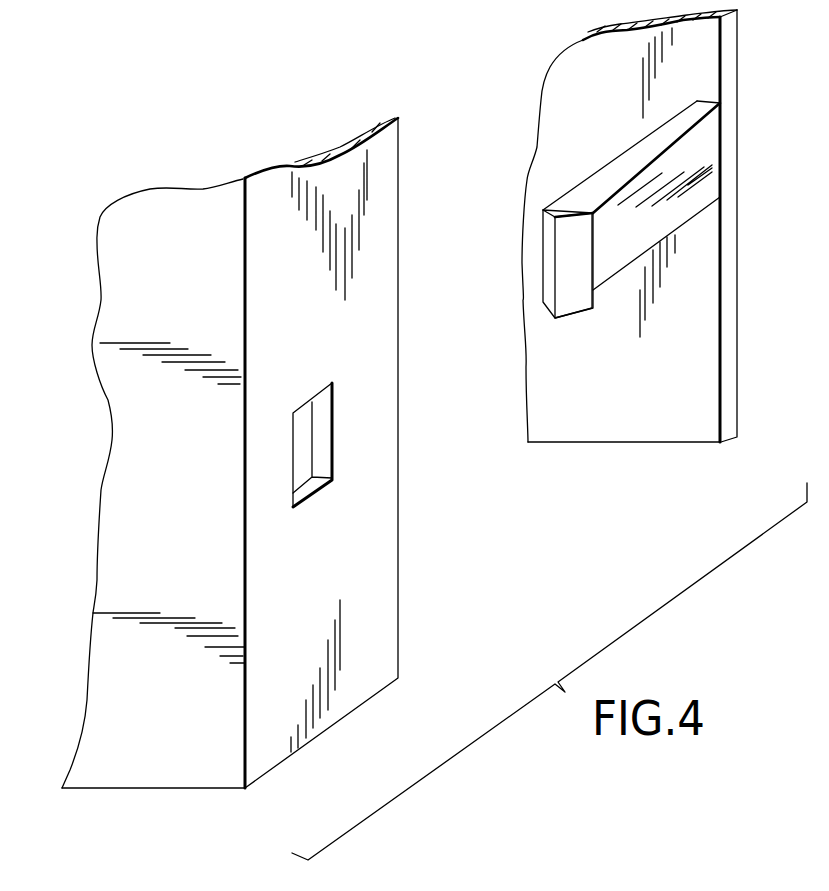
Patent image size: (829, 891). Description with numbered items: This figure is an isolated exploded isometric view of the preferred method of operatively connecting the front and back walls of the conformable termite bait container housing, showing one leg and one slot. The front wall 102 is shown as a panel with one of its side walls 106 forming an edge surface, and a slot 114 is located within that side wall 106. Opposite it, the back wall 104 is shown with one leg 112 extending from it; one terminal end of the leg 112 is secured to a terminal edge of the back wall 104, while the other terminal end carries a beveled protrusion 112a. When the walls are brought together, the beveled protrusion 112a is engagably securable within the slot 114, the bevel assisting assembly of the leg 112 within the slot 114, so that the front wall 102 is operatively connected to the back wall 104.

The front wall 102 is at (238, 453).
The back wall 104 is at (668, 397).
The side wall 106 is at (362, 667).
The leg 112 is at (639, 152).
The beveled protrusion 112a is at (576, 290).
The slot 114 is at (300, 403).